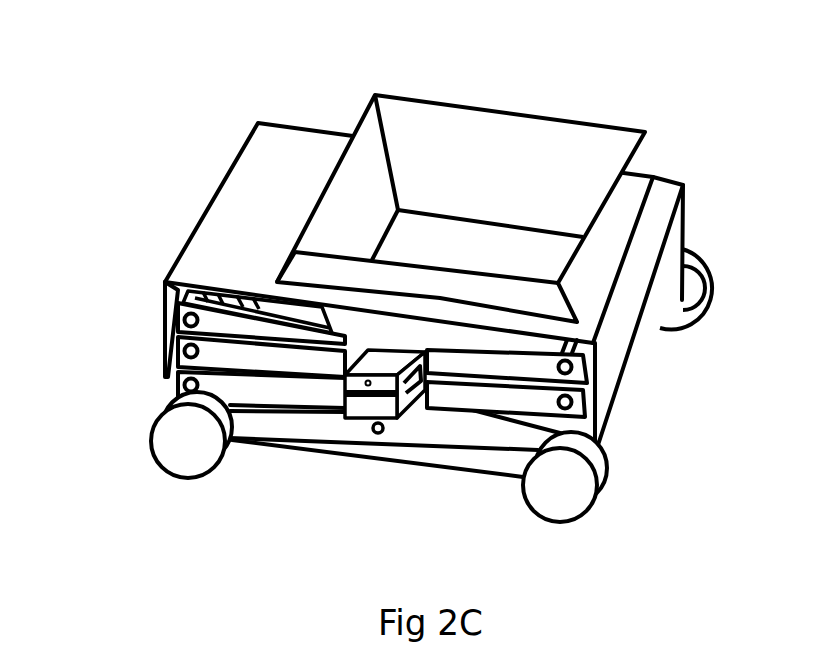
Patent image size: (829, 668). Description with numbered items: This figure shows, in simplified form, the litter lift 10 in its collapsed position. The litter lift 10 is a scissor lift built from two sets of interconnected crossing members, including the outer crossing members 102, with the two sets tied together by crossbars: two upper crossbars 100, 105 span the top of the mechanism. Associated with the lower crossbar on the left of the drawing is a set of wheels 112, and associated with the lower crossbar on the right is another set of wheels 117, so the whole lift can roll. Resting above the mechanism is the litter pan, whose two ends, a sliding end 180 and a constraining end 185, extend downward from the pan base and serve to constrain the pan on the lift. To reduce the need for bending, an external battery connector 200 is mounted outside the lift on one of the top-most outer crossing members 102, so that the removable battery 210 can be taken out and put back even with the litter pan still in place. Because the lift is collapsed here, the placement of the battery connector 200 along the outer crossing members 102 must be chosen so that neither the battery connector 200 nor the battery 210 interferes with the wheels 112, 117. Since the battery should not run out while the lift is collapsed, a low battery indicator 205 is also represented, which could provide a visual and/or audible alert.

The litter lift 10 is at (440, 486).
The upper crossbar 100 is at (187, 293).
The outer crossing member 102 is at (253, 356).
The upper crossbar 105 is at (577, 348).
The wheels 112 is at (153, 432).
The wheels 117 is at (583, 488).
The sliding end 180 is at (163, 315).
The constraining end 185 is at (640, 303).
The battery connector 200 is at (396, 357).
The low battery indicator 205 is at (332, 469).
The removable battery 210 is at (590, 435).